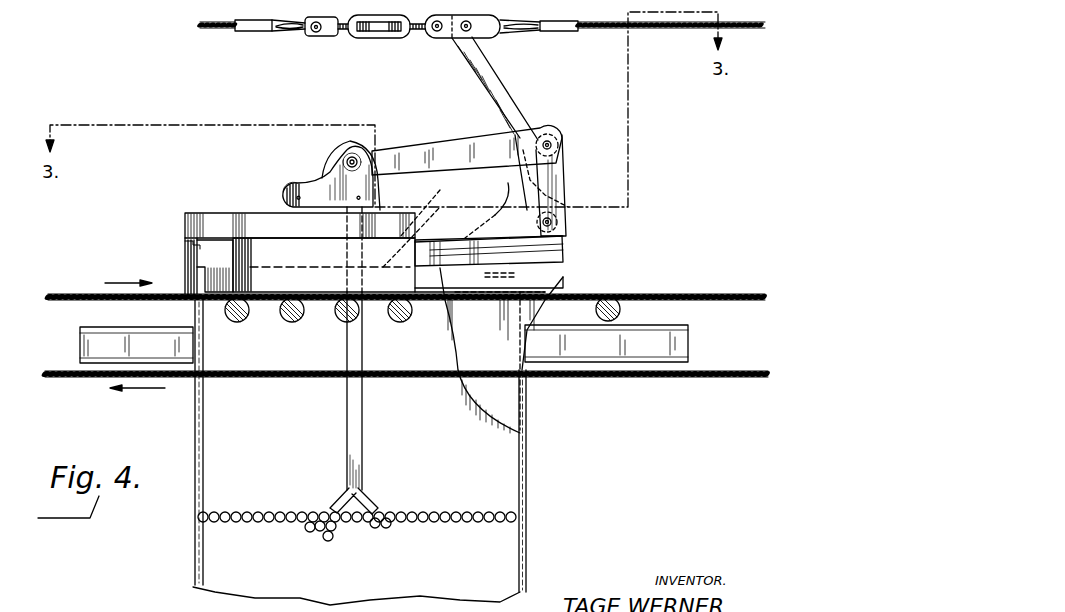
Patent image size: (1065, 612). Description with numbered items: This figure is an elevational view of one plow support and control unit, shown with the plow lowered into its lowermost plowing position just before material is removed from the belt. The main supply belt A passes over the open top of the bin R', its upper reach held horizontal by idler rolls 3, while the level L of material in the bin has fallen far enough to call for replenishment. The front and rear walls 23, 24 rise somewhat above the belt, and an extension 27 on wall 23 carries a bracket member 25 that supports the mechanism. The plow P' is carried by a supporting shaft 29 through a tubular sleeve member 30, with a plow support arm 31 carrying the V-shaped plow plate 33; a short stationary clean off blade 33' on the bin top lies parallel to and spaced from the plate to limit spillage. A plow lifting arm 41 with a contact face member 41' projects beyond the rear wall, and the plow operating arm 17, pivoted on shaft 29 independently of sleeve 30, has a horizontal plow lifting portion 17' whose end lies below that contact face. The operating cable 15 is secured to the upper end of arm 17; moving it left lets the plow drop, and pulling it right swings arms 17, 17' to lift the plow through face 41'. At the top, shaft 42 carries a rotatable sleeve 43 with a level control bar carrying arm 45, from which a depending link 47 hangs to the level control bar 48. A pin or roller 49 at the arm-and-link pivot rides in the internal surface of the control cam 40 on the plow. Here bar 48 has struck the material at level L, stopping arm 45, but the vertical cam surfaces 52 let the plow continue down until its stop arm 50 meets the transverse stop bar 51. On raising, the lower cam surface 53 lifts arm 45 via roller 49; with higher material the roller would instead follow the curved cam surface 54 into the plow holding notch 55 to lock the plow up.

The idler rolls 3 is at (636, 316).
The operating cable 15 is at (222, 31).
The plow operating arm 17 is at (499, 88).
The plow lifting portion 17' is at (489, 241).
The front wall 23 is at (498, 418).
The rear wall 24 is at (220, 280).
The bracket member 25 is at (563, 247).
The extension 27 is at (565, 287).
The supporting shaft 29 is at (556, 222).
The tubular sleeve member 30 is at (565, 190).
The plow support arm 31 is at (487, 208).
The plow plate 33 is at (236, 218).
The stationary clean off blade 33' is at (525, 255).
The control cam 40 is at (300, 176).
The plow lifting arm 41 is at (428, 207).
The contact face member 41' is at (405, 247).
The level control bar carrying shaft 42 is at (560, 143).
The rotatable sleeve 43 is at (555, 123).
The level control bar carrying arm 45 is at (468, 119).
The depending link 47 is at (347, 413).
The level control bar 48 is at (372, 505).
The pin or roller 49 is at (358, 160).
The stop arm 50 is at (207, 225).
The transverse stop bar 51 is at (187, 247).
The vertical cam surfaces 52 is at (327, 178).
The lower cam surface 53 is at (318, 202).
The curved cam surface 54 is at (300, 181).
The plow holding notch 55 is at (306, 185).
The main supply belt A is at (82, 290).
The level of material L is at (283, 515).
The plow P' is at (172, 203).
The bin R' is at (378, 452).